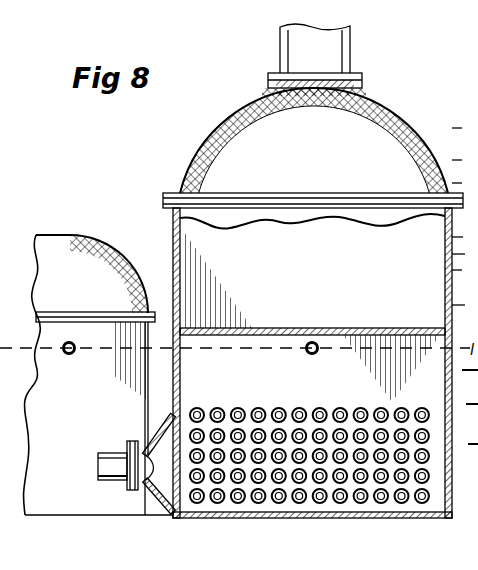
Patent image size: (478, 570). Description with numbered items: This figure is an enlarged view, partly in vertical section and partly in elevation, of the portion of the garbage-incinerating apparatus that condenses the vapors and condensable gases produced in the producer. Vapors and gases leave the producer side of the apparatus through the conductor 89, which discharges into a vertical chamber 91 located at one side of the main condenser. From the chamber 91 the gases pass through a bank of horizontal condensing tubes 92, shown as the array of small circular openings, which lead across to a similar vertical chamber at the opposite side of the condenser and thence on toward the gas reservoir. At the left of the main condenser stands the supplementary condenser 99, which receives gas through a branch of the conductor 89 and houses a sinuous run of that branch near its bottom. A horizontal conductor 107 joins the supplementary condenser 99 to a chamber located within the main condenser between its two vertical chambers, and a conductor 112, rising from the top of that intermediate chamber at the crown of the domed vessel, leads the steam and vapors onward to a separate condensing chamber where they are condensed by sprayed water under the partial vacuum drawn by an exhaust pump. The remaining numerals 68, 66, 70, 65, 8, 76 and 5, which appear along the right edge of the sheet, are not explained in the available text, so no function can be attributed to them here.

The conductor 112 is at (314, 60).
The horizontal conductor 107 is at (69, 354).
The vertical chamber 91 is at (312, 423).
The horizontal condensing tubes 92 is at (298, 408).
The supplementary condenser 99 is at (100, 375).
The conductor 89 is at (109, 452).
The dome 68 is at (465, 129).
The flange 66 is at (465, 162).
The gasket 70 is at (465, 185).
The wall 65 is at (465, 238).
The vessel 8 is at (463, 255).
The liner 76 is at (465, 272).
The casing 5 is at (463, 307).